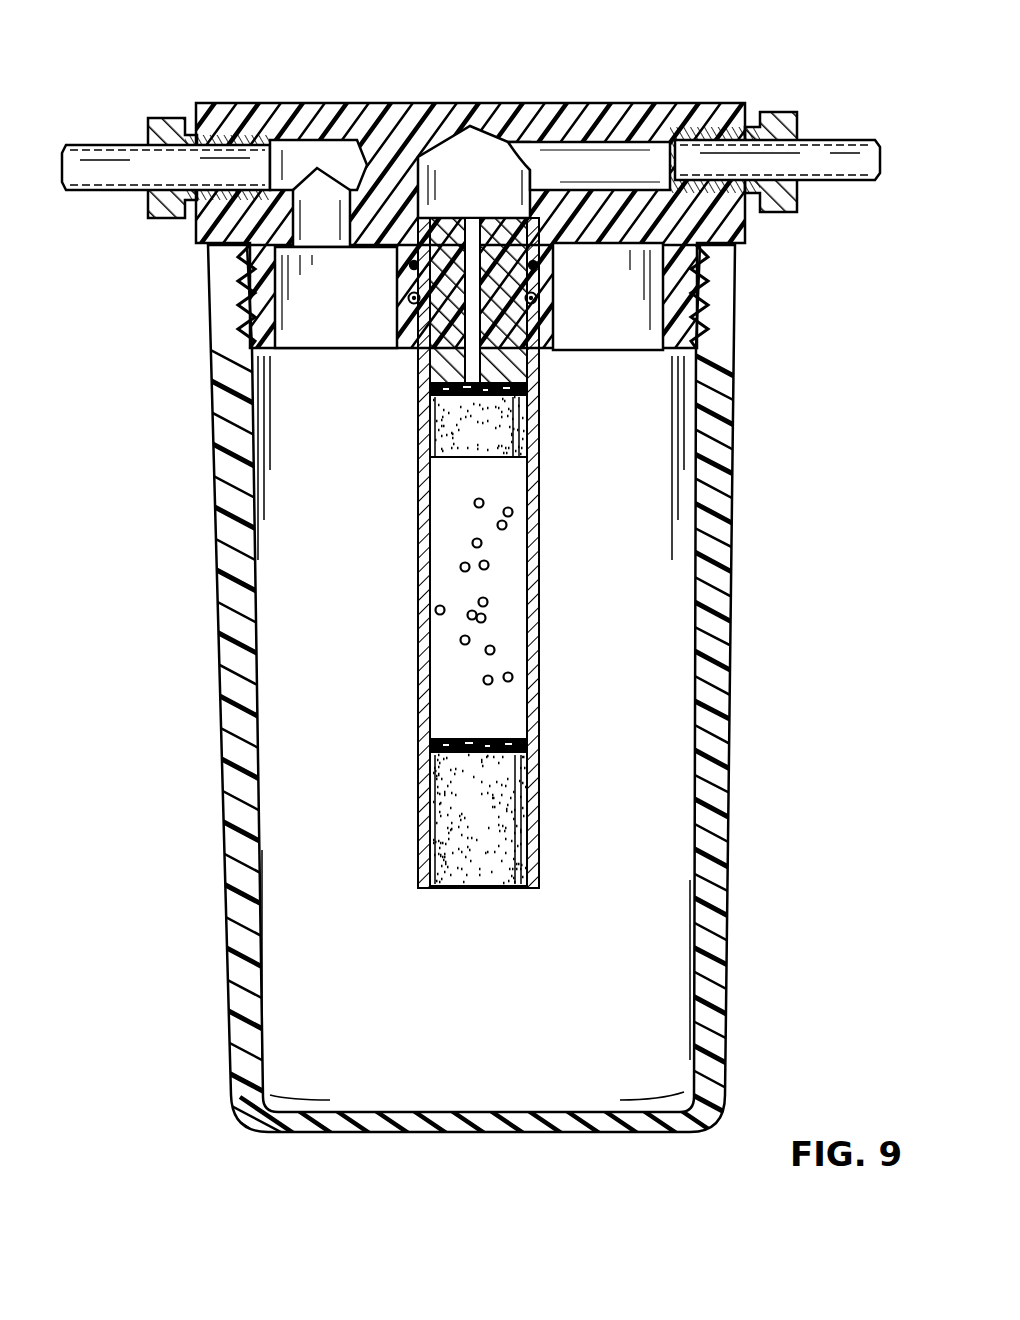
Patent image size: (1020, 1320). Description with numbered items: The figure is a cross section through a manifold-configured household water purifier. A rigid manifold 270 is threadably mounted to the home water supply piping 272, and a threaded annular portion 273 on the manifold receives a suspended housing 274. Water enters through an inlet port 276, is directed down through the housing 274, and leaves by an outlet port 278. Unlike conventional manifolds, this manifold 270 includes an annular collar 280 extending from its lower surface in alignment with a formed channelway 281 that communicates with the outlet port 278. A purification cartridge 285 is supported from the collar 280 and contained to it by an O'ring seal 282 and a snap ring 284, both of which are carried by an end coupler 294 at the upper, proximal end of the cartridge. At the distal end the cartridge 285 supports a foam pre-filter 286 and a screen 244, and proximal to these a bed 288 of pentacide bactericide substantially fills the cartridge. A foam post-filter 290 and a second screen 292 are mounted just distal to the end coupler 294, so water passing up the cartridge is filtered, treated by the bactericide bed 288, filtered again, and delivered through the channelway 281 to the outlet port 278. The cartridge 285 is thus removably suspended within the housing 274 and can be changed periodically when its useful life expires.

The screen 244 is at (540, 742).
The manifold 270 is at (410, 103).
The home water supply piping 272 is at (125, 146).
The threaded annular portion 273 is at (236, 308).
The housing 274 is at (228, 868).
The inlet port 276 is at (292, 132).
The outlet port 278 is at (647, 160).
The annular collar 280 is at (400, 298).
The channelway 281 is at (527, 170).
The O'ring seal 282 is at (537, 267).
The snap ring 284 is at (537, 301).
The purification cartridge 285 is at (542, 647).
The foam pre-filter 286 is at (490, 872).
The bed of pentacide bactericide 288 is at (460, 645).
The foam post-filter 290 is at (529, 450).
The screen 292 is at (539, 394).
The end coupler 294 is at (432, 372).